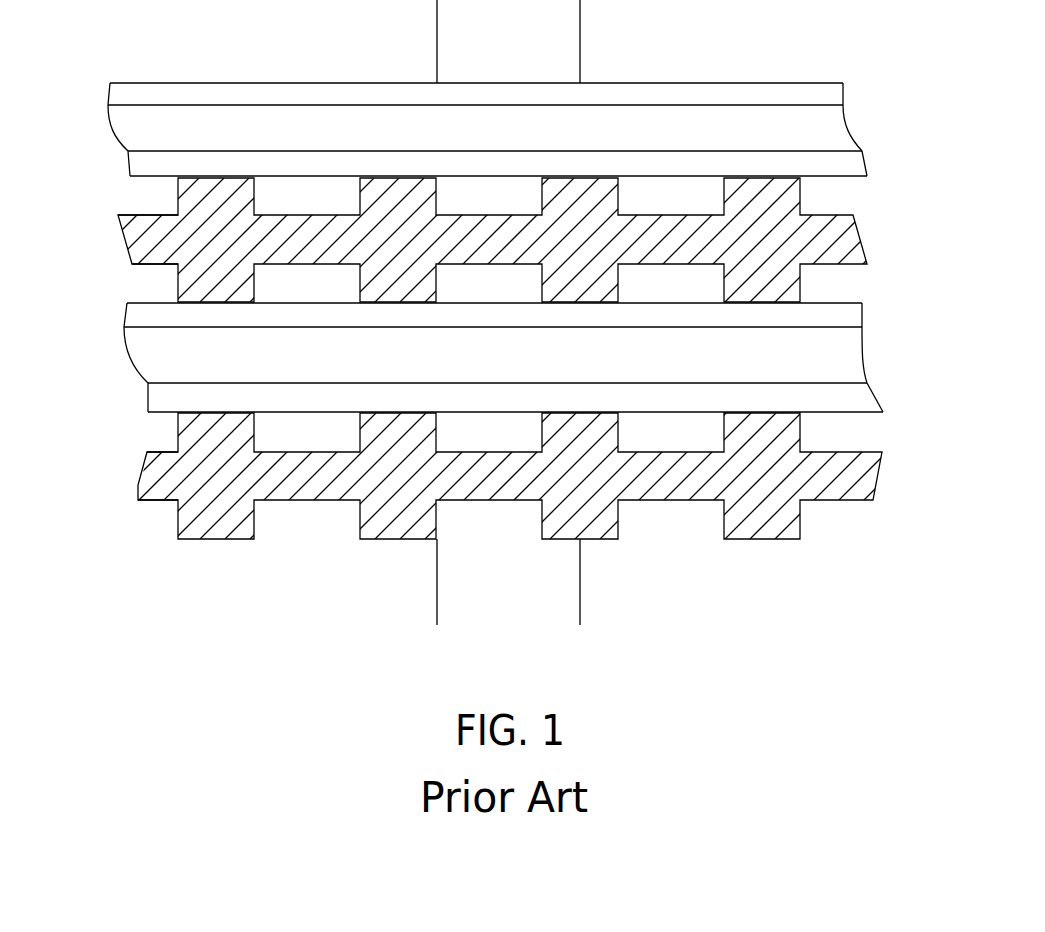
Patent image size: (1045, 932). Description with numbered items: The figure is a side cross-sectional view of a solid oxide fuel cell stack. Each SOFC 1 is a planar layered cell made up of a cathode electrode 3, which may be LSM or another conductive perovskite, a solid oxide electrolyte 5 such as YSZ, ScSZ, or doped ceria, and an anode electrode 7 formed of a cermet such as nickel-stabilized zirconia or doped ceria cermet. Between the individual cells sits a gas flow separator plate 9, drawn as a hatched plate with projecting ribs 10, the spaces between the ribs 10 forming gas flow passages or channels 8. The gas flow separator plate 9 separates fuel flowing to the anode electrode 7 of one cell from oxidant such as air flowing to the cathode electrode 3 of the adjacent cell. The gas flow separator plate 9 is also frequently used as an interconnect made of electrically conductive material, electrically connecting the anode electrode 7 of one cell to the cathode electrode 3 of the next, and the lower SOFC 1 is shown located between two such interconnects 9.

The solid oxide fuel cell 1 is at (494, 242).
The cathode electrode 3 is at (110, 93).
The solid oxide electrolyte 5 is at (108, 130).
The anode electrode 7 is at (135, 168).
The gas flow passages or channels 8 is at (318, 208).
The gas flow separator plate 9 is at (888, 193).
The ribs 10 is at (177, 203).